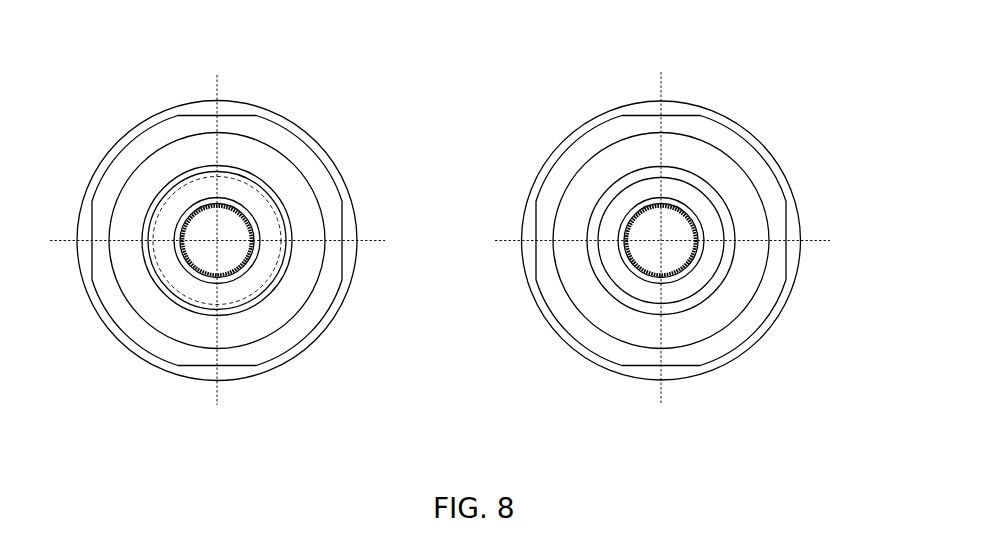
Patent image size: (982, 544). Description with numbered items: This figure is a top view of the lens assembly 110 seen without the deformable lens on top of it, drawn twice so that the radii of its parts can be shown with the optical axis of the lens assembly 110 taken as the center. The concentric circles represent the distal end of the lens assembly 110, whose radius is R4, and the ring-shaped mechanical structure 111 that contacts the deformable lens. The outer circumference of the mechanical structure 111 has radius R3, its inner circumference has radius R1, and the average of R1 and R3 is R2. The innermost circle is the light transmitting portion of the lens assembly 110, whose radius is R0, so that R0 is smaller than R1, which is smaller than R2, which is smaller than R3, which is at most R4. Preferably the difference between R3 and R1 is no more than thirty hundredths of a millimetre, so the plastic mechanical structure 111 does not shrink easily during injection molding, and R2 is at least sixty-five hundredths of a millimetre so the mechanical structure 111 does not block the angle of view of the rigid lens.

The lens assembly 110 is at (276, 399).
The mechanical structure 111 is at (277, 274).
The radius of the light transmitting portion R0 is at (217, 240).
The radius of the inner circumference of the mechanical structure R1 is at (217, 240).
The average radius of the mechanical structure R2 is at (217, 240).
The radius of the outer circumference of the mechanical structure R3 is at (217, 240).
The radius of the distal end of the lens assembly R4 is at (661, 240).